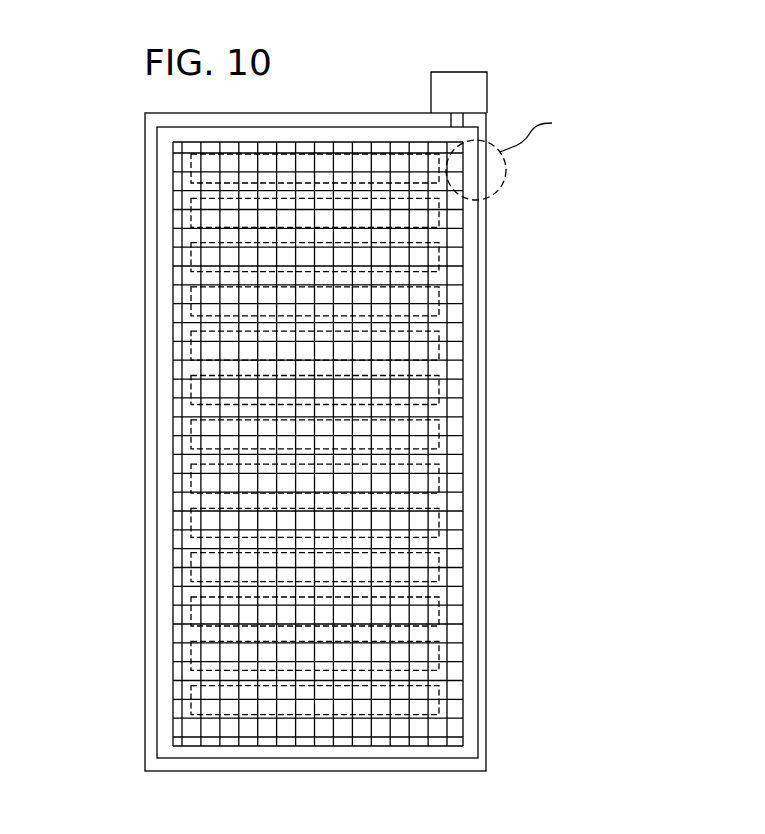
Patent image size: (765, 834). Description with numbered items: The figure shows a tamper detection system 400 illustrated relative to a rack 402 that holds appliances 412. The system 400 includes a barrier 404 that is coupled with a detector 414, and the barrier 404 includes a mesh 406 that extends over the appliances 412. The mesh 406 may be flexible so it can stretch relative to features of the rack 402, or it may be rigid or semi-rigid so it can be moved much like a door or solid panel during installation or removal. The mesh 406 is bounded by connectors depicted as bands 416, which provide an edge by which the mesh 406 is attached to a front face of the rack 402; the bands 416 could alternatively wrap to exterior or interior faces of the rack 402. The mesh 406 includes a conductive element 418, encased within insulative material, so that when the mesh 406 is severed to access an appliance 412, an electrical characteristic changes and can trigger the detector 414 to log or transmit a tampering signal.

The system 400 is at (342, 394).
The rack 402 is at (145, 218).
The barrier 404 is at (442, 284).
The mesh 406 is at (440, 378).
The appliances 412 is at (175, 517).
The detector 414 is at (487, 92).
The bands 416 is at (480, 473).
The conductive element 418 is at (448, 585).